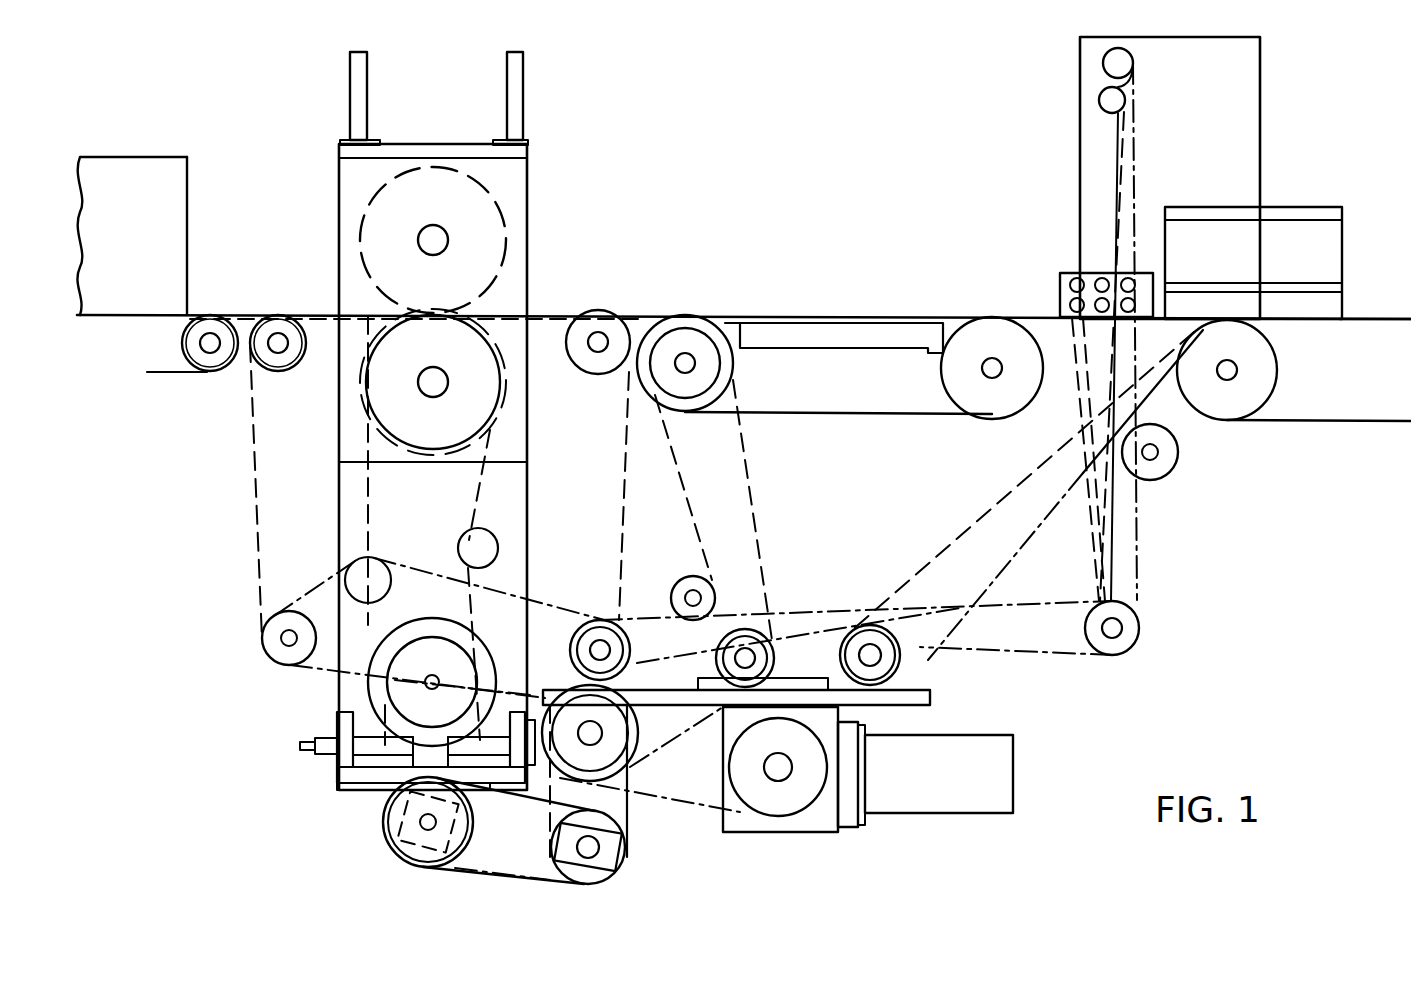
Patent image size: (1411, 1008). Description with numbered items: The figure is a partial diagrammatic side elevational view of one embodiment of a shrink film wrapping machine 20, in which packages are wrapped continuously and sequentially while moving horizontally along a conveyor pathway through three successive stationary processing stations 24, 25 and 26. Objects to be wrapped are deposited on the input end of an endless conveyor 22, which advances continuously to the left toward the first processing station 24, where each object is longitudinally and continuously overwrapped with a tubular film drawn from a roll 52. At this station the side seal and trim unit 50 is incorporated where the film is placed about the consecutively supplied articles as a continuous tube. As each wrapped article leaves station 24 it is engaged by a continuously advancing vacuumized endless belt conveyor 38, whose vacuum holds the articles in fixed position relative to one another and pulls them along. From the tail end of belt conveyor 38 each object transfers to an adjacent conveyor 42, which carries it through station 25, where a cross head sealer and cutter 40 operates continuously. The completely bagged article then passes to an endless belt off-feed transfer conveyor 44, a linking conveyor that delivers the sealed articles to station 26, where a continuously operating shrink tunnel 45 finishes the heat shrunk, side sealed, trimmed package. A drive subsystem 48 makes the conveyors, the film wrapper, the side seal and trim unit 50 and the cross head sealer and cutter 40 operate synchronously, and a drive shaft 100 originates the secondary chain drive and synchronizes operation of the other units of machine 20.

The shrink film wrapping machine 20 is at (1213, 704).
The endless conveyor 22 is at (1370, 319).
The first processing station 24 is at (1280, 182).
The processing station 25 is at (542, 176).
The processing station 26 is at (207, 174).
The vacuumized endless belt conveyor 38 is at (882, 314).
The cross head sealer and cutter 40 is at (505, 296).
The conveyor 42 is at (555, 313).
The off-feed transfer conveyor 44 is at (197, 313).
The shrink tunnel 45 is at (196, 237).
The drive subsystem 48 is at (1162, 547).
The side seal and trim unit 50 is at (1064, 258).
The roll 52 is at (1108, 100).
The drive shaft 100 is at (1122, 630).